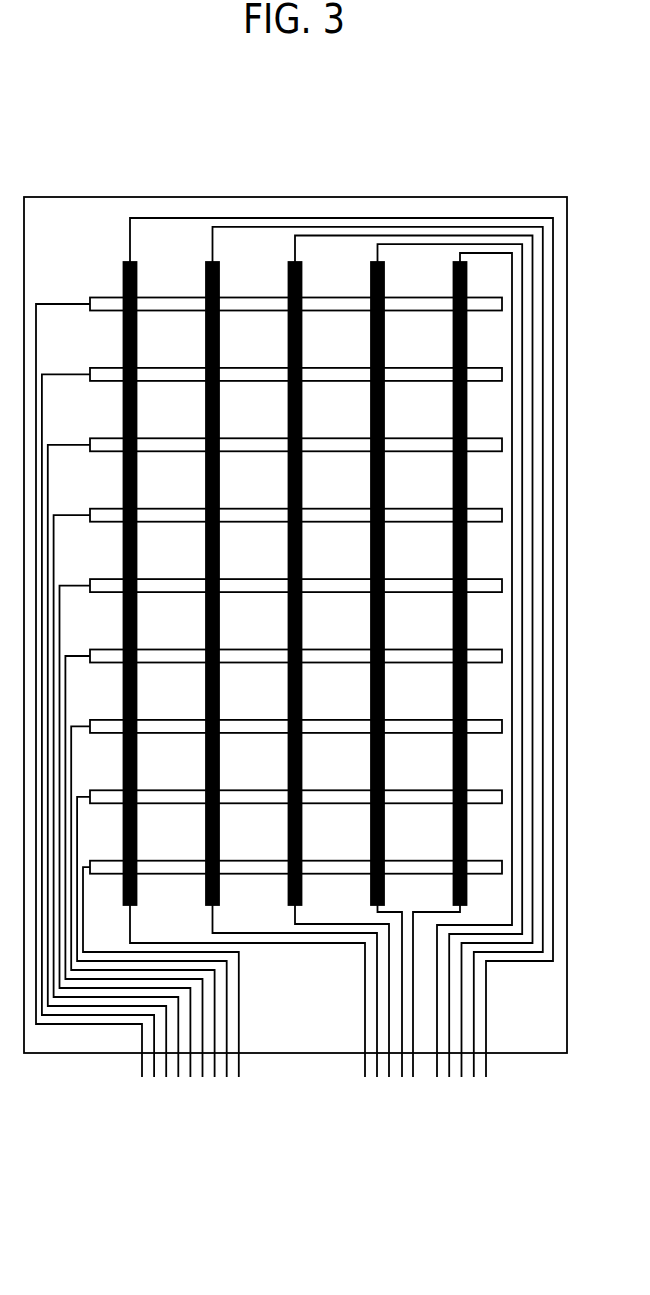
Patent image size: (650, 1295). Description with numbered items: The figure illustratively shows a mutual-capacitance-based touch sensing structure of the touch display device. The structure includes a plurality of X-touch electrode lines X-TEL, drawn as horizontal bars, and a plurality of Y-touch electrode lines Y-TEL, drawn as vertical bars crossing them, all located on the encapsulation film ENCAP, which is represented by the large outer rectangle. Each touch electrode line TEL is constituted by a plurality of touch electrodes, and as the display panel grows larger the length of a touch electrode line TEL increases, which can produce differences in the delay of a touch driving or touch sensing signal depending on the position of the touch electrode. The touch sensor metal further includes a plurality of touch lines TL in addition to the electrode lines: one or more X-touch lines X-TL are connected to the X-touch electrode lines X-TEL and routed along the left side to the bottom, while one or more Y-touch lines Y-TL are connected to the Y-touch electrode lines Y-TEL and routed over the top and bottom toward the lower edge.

The encapsulation film ENCAP is at (100, 197).
The touch electrode line TEL is at (296, 490).
The X-touch electrode lines X-TEL is at (332, 297).
The Y-touch electrode lines Y-TEL is at (452, 287).
The touch lines TL is at (294, 703).
The X-touch lines X-TL is at (239, 1078).
The Y-touch lines Y-TL is at (413, 1078).